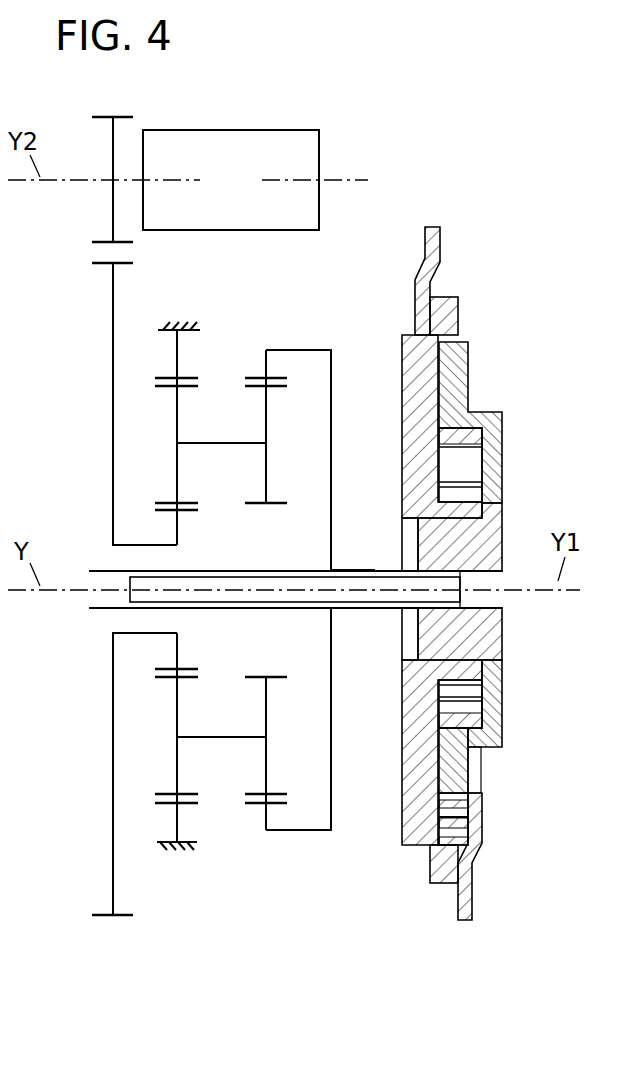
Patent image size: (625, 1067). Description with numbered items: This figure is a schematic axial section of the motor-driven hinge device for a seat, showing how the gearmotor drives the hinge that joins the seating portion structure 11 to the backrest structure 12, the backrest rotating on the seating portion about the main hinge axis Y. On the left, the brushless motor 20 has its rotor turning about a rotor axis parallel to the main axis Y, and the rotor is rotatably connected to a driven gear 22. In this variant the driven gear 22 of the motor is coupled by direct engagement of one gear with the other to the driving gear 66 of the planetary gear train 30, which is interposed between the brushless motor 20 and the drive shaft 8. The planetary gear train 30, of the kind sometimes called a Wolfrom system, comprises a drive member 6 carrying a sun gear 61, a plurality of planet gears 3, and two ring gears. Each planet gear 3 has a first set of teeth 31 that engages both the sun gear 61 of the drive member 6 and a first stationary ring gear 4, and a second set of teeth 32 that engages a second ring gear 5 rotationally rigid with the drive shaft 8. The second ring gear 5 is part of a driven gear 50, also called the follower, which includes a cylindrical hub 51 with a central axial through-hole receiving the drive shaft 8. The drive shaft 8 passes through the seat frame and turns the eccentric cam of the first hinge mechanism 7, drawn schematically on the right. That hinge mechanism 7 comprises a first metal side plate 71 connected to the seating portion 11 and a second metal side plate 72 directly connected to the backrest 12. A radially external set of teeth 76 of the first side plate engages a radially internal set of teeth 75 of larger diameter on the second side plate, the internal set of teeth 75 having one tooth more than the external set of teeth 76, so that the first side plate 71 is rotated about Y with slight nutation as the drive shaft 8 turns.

The planet gear 3 is at (222, 430).
The first stationary ring gear 4 is at (159, 328).
The second ring gear 5 is at (280, 380).
The drive member 6 is at (112, 340).
The first hinge mechanism 7 is at (528, 517).
The drive shaft 8 is at (393, 612).
The seating portion structure 11 is at (473, 896).
The backrest structure 12 is at (437, 226).
The brushless motor 20 is at (230, 130).
The driven gear 22 is at (112, 212).
The planetary gear train 30 is at (243, 882).
The first set of teeth 31 is at (168, 387).
The second set of teeth 32 is at (283, 392).
The driven gear 50 is at (341, 366).
The cylindrical hub 51 is at (350, 569).
The sun gear 61 is at (182, 512).
The driving gear 66 is at (103, 266).
The first metal side plate 71 is at (458, 766).
The second metal side plate 72 is at (449, 297).
The radially internal set of teeth 75 is at (455, 336).
The radially external set of teeth 76 is at (466, 343).